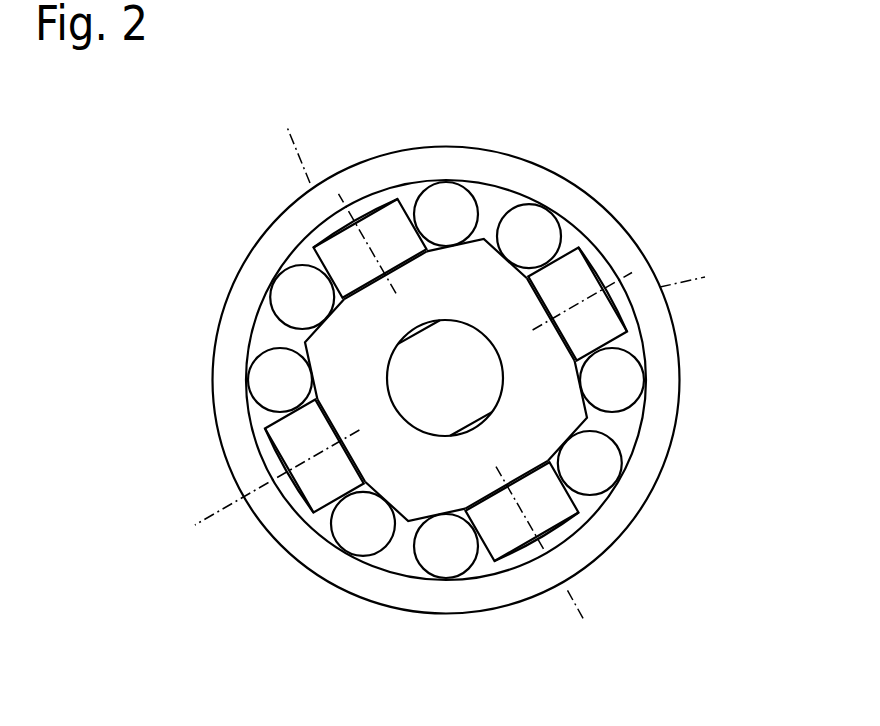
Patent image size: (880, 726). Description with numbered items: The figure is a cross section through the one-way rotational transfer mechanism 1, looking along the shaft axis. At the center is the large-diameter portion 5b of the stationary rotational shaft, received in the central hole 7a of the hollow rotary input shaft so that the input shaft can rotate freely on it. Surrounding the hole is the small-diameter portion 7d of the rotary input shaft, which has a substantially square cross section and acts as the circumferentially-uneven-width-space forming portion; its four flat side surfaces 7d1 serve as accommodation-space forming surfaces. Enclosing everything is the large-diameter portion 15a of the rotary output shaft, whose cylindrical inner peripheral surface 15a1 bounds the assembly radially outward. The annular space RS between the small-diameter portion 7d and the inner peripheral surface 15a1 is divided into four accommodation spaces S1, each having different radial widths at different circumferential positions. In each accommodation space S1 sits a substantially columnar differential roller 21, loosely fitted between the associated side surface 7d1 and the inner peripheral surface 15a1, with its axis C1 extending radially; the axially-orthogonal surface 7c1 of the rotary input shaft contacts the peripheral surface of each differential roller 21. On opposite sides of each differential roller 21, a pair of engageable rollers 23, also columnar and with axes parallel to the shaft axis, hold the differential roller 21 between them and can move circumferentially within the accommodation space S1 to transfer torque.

The one-way rotational transfer mechanism 1 is at (197, 163).
The differential roller 21 is at (338, 235).
The engageable roller 23 is at (288, 280).
The axis of the differential roller C1 is at (443, 378).
The side surface 7d1 is at (365, 245).
The accommodation space S1 is at (412, 200).
The axially-orthogonal surface 7c1 is at (467, 280).
The small-diameter portion 7d is at (498, 242).
The inner peripheral surface 15a1 is at (517, 180).
The large-diameter portion 15a is at (555, 187).
The annular space RS is at (647, 342).
The large-diameter portion 5b is at (467, 400).
The central hole 7a is at (418, 428).